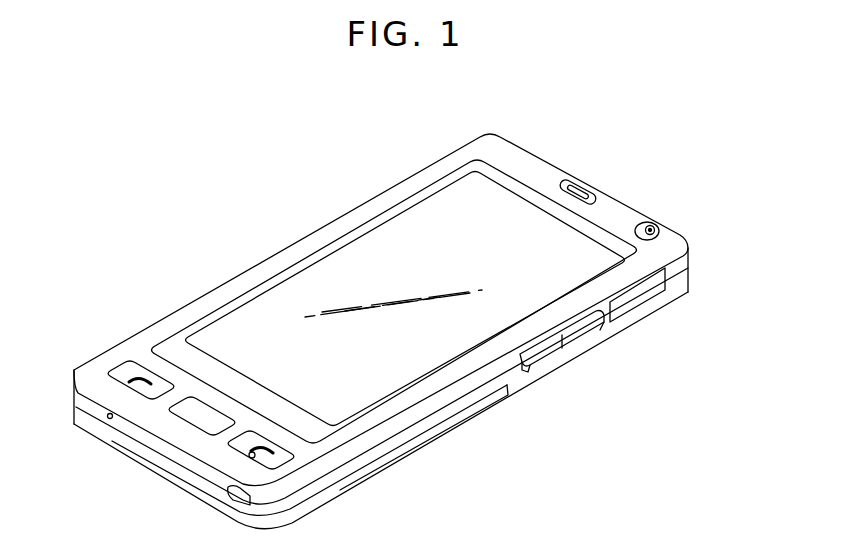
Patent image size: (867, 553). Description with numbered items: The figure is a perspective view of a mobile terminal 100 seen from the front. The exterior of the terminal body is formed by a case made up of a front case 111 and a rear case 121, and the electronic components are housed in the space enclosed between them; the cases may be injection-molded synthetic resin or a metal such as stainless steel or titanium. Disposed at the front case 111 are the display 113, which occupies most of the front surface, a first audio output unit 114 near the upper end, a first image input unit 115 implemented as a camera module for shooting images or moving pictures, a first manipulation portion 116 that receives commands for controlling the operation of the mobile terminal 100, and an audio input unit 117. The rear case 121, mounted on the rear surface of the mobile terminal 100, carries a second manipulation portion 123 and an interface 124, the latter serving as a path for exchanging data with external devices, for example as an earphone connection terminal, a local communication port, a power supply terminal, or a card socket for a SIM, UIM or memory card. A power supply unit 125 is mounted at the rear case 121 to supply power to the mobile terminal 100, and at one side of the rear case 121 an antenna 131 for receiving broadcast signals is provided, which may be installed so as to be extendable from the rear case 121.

The mobile terminal 100 is at (232, 192).
The front case 111 is at (684, 257).
The rear case 121 is at (684, 284).
The display 113 is at (388, 233).
The first audio output unit 114 is at (580, 193).
The first image input unit 115 is at (655, 229).
The first manipulation portion 116 is at (122, 371).
The audio input unit 117 is at (107, 418).
The second manipulation portion 123 is at (544, 361).
The interface 124 is at (632, 301).
The power supply unit 125 is at (397, 450).
The antenna 131 is at (228, 497).